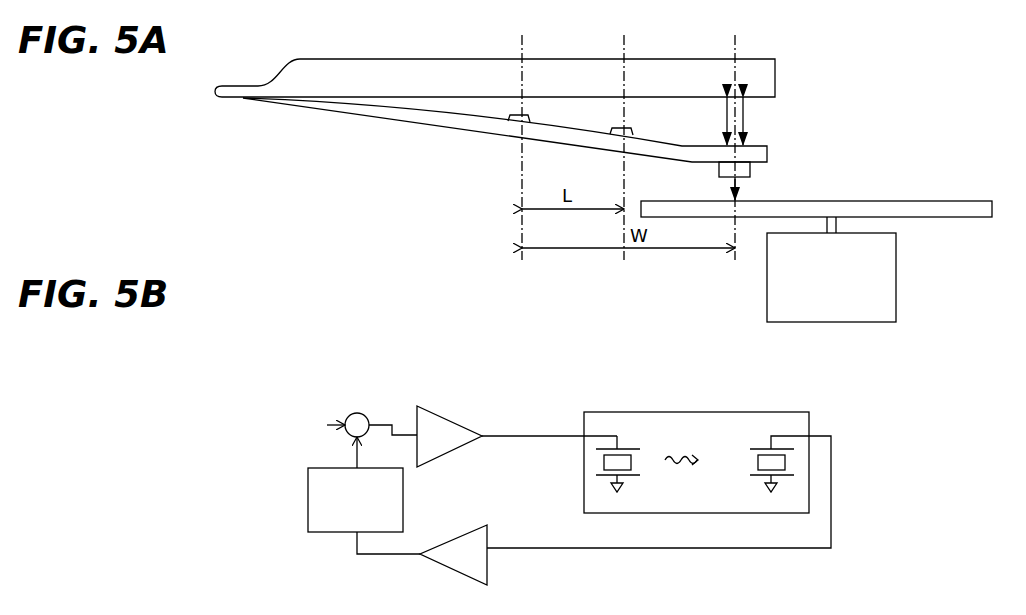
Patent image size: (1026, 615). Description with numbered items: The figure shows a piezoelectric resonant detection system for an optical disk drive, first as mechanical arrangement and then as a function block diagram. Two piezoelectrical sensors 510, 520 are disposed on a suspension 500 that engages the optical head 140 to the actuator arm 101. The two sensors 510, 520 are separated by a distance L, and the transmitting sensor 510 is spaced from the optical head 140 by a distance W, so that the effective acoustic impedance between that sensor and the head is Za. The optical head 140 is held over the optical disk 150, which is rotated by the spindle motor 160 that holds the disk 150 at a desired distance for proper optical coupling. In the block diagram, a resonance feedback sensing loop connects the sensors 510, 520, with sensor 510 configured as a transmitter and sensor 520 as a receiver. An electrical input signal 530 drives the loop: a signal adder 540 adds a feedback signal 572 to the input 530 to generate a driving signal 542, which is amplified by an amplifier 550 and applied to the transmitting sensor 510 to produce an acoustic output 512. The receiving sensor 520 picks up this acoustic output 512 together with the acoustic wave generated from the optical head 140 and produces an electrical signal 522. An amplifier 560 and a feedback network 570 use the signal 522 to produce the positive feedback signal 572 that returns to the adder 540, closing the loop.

In FIG. 5A, the actuator 101 is at (495, 78).
In FIG. 5A, the suspension 500 is at (313, 107).
In FIG. 5A, the piezoelectrical sensor 510 is at (512, 124).
In FIG. 5B, the piezoelectrical sensor 510 is at (638, 463).
In FIG. 5A, the piezoelectrical sensor 520 is at (632, 133).
In FIG. 5B, the piezoelectrical sensor 520 is at (748, 461).
In FIG. 5A, the optical head 140 is at (805, 160).
In FIG. 5A, the optical disk 150 is at (940, 218).
In FIG. 5A, the disk handling unit 160 is at (831, 269).
In FIG. 5B, the electrical input signal 530 is at (330, 421).
In FIG. 5B, the signal adder 540 is at (356, 412).
In FIG. 5B, the driving signal 542 is at (392, 427).
In FIG. 5B, the amplifier 550 is at (450, 426).
In FIG. 5B, the acoustic output 512 is at (690, 465).
In FIG. 5B, the electrical signal 522 is at (832, 487).
In FIG. 5B, the amplifier 560 is at (462, 568).
In FIG. 5B, the feedback network 570 is at (308, 495).
In FIG. 5B, the feedback signal 572 is at (357, 454).